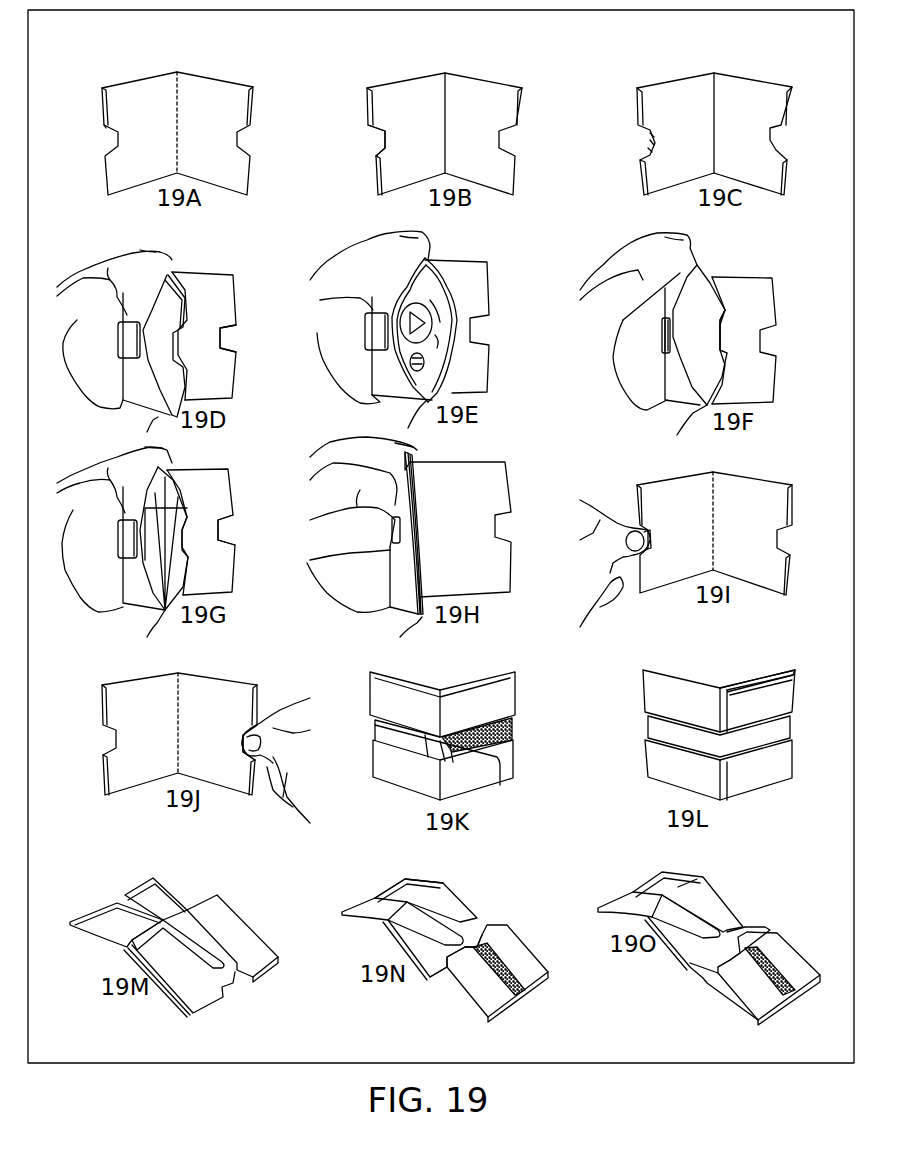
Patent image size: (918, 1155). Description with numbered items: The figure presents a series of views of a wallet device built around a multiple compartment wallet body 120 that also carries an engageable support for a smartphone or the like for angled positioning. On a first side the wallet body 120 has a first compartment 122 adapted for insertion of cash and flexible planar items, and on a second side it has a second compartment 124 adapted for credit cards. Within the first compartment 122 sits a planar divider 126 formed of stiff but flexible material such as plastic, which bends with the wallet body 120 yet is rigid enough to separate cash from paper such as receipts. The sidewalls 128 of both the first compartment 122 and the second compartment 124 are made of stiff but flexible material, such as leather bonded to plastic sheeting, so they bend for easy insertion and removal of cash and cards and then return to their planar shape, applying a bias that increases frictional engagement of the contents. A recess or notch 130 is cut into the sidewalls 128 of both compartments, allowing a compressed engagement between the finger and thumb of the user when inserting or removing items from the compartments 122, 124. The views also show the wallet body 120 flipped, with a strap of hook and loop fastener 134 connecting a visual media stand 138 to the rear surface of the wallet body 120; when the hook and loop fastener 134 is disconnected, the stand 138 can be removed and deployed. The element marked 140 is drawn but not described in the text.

The wallet body 120 is at (177, 72).
The first compartment 122 is at (100, 88).
The second compartment 124 is at (252, 97).
The planar divider 126 is at (378, 138).
The sidewalls 128 is at (185, 375).
The notch 130 is at (227, 333).
The hook and loop fastener 134 is at (405, 733).
The visual media stand 138 is at (757, 698).
The side flap 140 is at (697, 963).